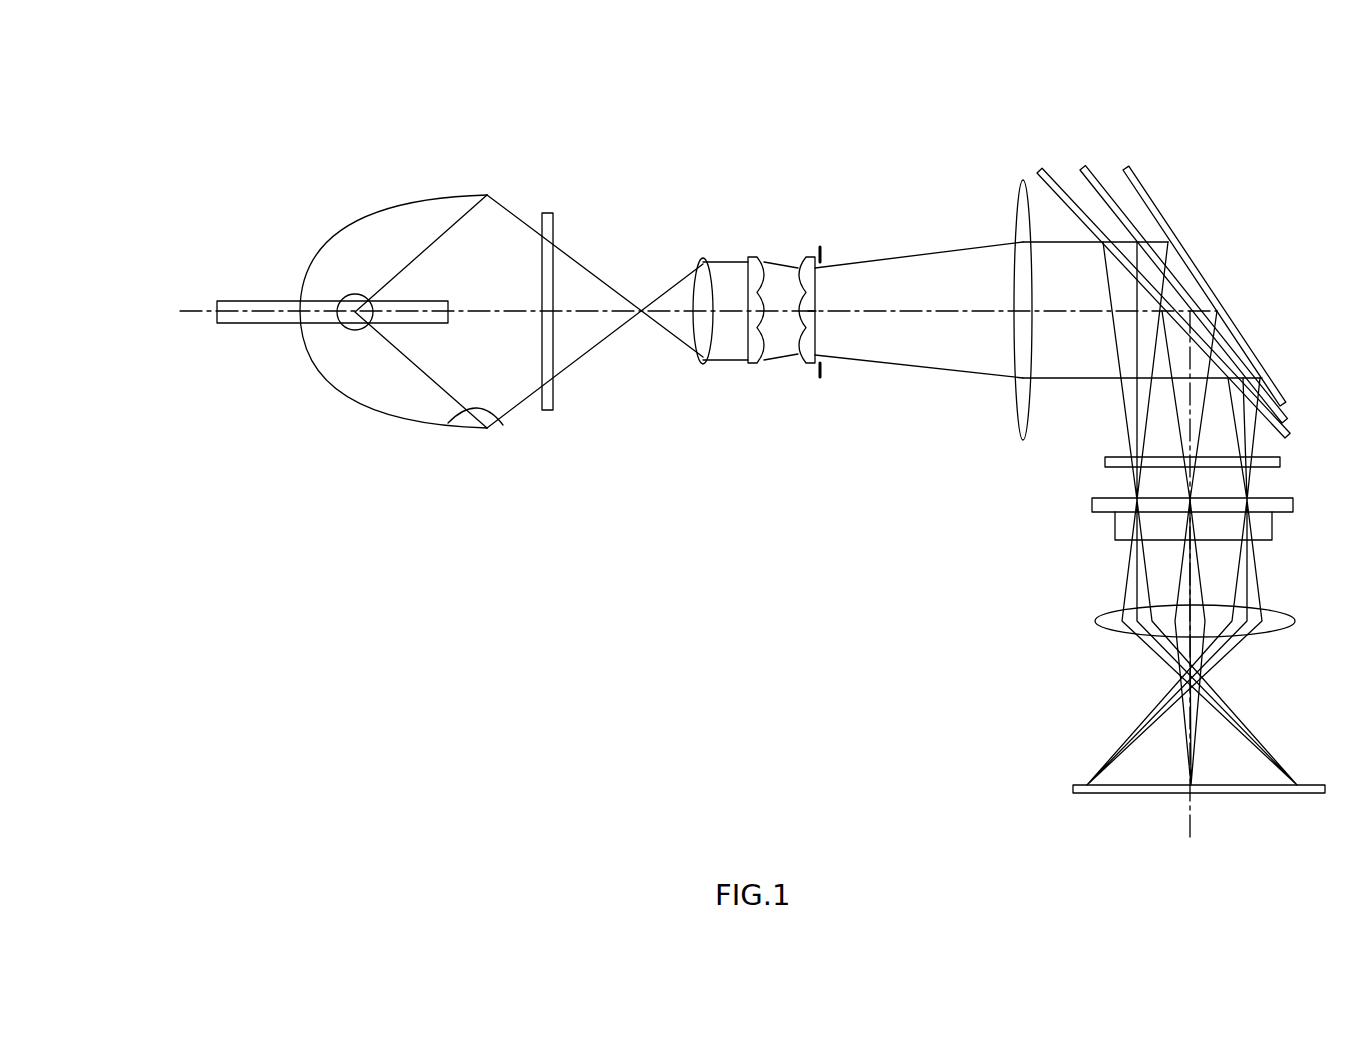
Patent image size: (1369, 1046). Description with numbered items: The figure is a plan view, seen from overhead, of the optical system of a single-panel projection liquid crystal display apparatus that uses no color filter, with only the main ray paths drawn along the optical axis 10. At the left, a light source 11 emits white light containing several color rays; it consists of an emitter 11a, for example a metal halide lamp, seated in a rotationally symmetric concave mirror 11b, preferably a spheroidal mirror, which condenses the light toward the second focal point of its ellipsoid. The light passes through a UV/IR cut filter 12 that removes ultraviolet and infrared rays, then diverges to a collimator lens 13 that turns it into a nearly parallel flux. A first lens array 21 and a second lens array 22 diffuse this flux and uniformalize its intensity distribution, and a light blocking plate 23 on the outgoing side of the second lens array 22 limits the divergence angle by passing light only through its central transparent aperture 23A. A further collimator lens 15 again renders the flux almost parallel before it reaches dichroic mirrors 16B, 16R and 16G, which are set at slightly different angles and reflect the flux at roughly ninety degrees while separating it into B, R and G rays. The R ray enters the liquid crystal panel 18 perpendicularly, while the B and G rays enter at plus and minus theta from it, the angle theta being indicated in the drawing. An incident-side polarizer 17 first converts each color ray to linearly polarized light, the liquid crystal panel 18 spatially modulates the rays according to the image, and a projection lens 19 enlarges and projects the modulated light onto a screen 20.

The optical axis 10 is at (183, 311).
The light source 11 is at (410, 205).
The emitter 11a is at (350, 330).
The concave mirror 11b is at (503, 425).
The UV/IR cut filter 12 is at (548, 213).
The collimator lens 13 is at (703, 258).
The first lens array 21 is at (748, 363).
The second lens array 22 is at (812, 253).
The light blocking plate 23 is at (822, 368).
The aperture 23A is at (818, 322).
The collimator lens 15 is at (1022, 180).
The dichroic mirror 16B is at (1090, 215).
The dichroic mirror 16R is at (1137, 232).
The dichroic mirror 16G is at (1205, 280).
The incident angle theta is at (1166, 441).
The incident-side polarizer 17 is at (1105, 460).
The liquid crystal panel 18 is at (1092, 500).
The projection lens 19 is at (1097, 622).
The screen 20 is at (1075, 785).